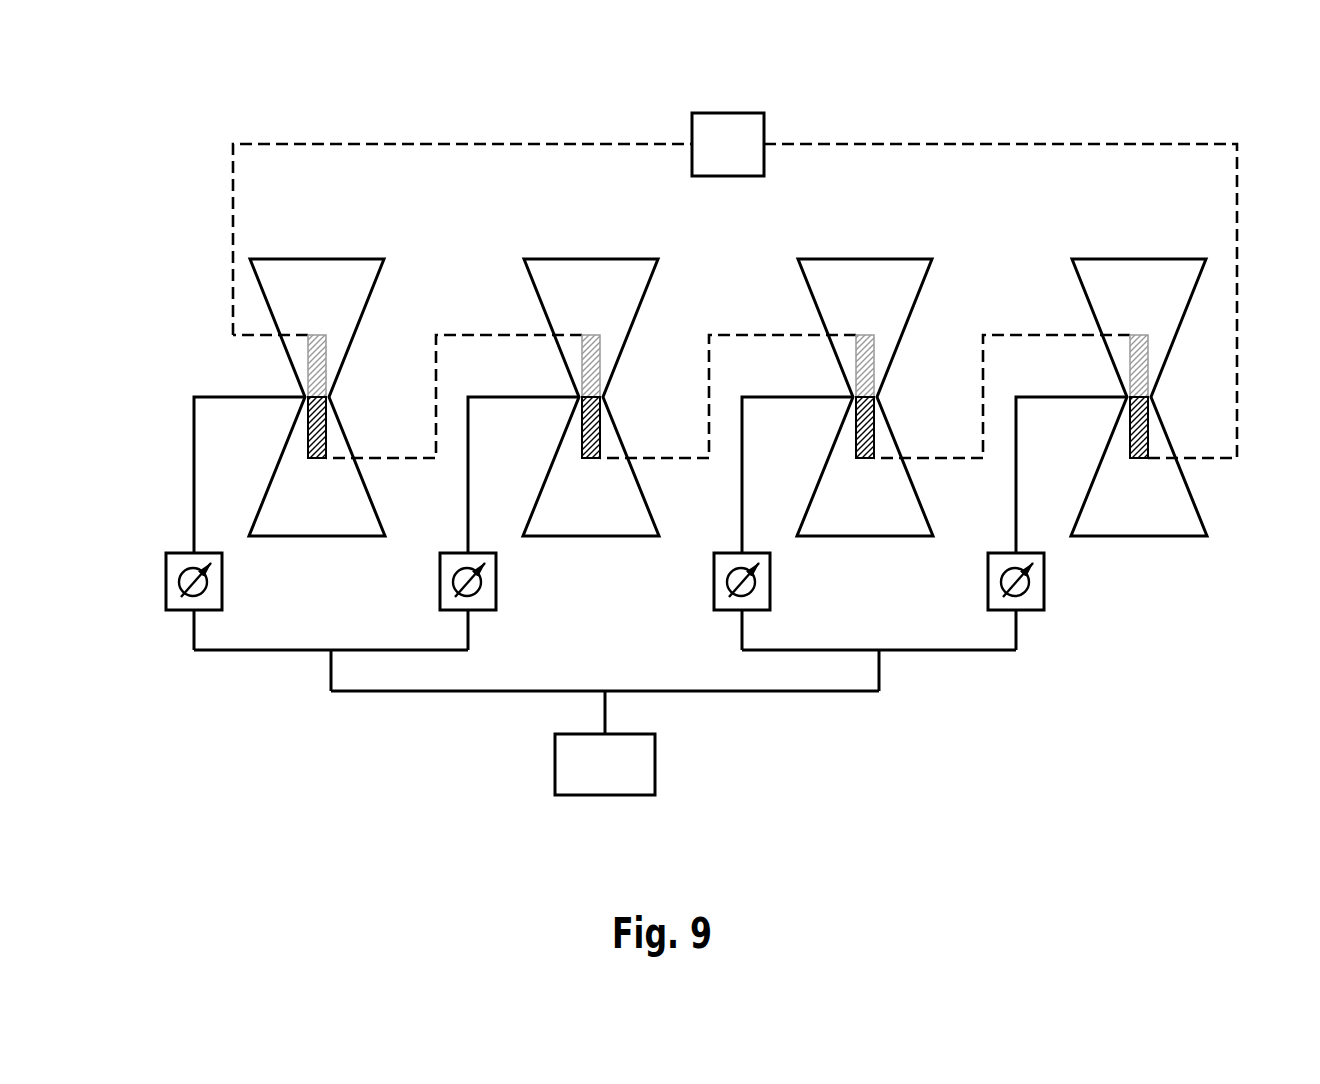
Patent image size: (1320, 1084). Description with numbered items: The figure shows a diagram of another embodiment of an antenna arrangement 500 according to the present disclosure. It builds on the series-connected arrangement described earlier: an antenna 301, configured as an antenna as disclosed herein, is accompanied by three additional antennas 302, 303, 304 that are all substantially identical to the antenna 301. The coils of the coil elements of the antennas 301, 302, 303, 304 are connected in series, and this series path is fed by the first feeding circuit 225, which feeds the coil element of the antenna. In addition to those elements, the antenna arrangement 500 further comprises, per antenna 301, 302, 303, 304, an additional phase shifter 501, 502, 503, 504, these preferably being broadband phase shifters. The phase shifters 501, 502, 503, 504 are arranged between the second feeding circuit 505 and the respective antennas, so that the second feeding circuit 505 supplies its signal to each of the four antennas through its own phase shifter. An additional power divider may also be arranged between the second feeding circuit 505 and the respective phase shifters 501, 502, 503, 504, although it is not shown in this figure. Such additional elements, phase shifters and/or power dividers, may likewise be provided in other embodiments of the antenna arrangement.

The antenna arrangement 500 is at (1182, 128).
The first feeding circuit 225 is at (724, 113).
The antenna 301 is at (309, 245).
The additional antenna 302 is at (583, 245).
The additional antenna 303 is at (857, 245).
The additional antenna 304 is at (1131, 245).
The phase shifter 501 is at (222, 580).
The phase shifter 502 is at (496, 580).
The phase shifter 503 is at (770, 580).
The phase shifter 504 is at (1044, 580).
The second feeding circuit 505 is at (607, 795).